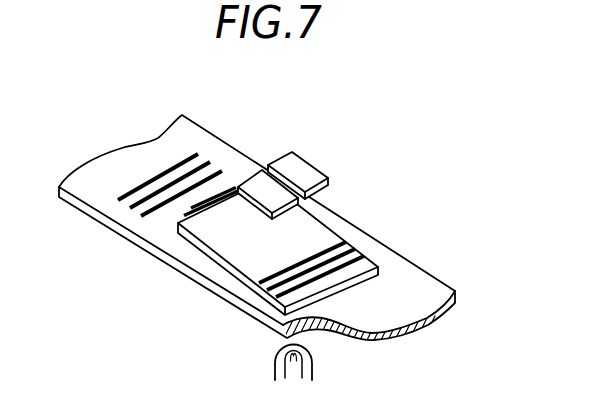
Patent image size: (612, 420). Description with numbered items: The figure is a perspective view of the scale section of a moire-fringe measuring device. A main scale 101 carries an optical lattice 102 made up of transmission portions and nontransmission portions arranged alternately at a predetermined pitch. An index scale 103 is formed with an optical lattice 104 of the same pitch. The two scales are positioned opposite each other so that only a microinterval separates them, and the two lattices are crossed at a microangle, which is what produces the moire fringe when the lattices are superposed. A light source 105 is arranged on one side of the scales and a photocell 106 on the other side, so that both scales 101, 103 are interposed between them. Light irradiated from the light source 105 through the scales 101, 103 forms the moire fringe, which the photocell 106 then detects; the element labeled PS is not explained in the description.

The main scale 101 is at (427, 285).
The optical lattice 102 is at (147, 213).
The index scale 103 is at (235, 251).
The optical lattice 104 is at (308, 261).
The light source 105 is at (313, 364).
The photocell 106 is at (322, 166).
The pressure sensor PS is at (318, 179).